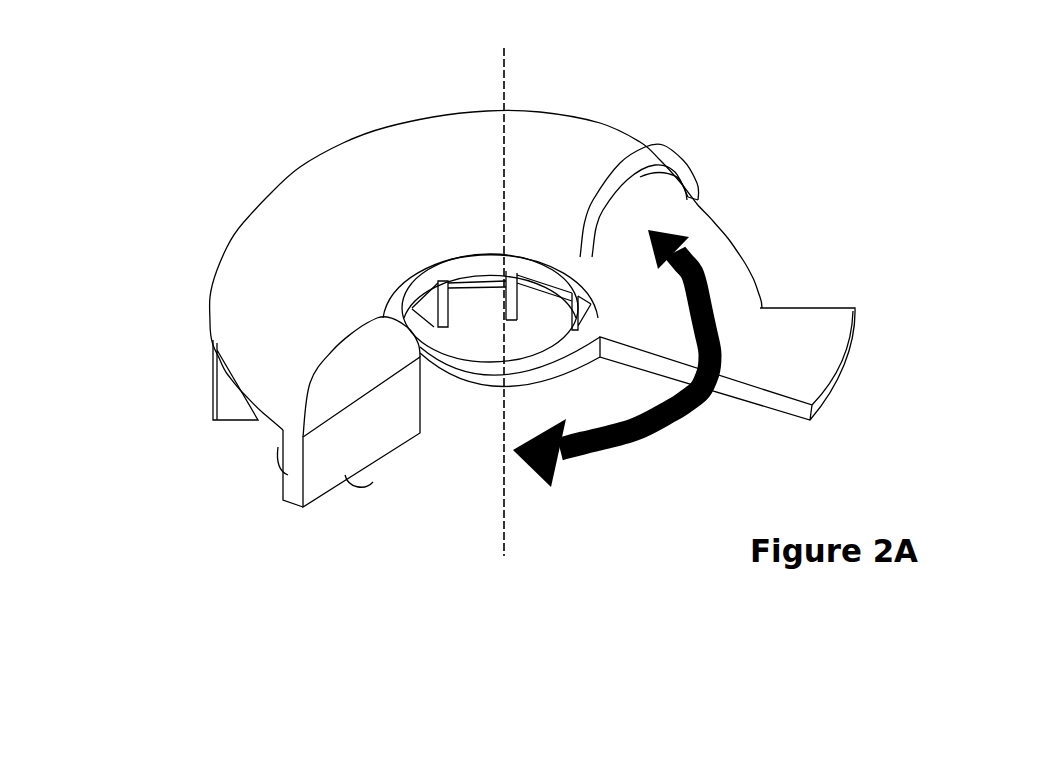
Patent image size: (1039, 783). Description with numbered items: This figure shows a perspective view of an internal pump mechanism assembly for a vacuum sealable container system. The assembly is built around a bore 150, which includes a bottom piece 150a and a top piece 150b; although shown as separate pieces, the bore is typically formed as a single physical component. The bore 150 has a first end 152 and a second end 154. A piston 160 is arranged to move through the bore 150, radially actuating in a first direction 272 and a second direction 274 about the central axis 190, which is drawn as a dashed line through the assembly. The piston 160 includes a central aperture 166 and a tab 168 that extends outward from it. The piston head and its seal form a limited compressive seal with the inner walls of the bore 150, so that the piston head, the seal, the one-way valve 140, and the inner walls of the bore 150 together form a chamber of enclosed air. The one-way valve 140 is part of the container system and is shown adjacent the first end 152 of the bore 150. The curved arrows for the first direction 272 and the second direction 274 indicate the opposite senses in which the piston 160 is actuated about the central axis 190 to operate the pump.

The central axis 190 is at (509, 54).
The second end 154 is at (663, 176).
The second direction 274 is at (689, 234).
The piston 160 is at (767, 324).
The tab 168 is at (823, 358).
The first direction 272 is at (553, 478).
The bore 150 is at (394, 298).
The bottom piece 150a is at (197, 407).
The top piece 150b is at (230, 275).
The central aperture 166 is at (493, 381).
The first end 152 is at (372, 439).
The one-way valve 140 is at (346, 482).